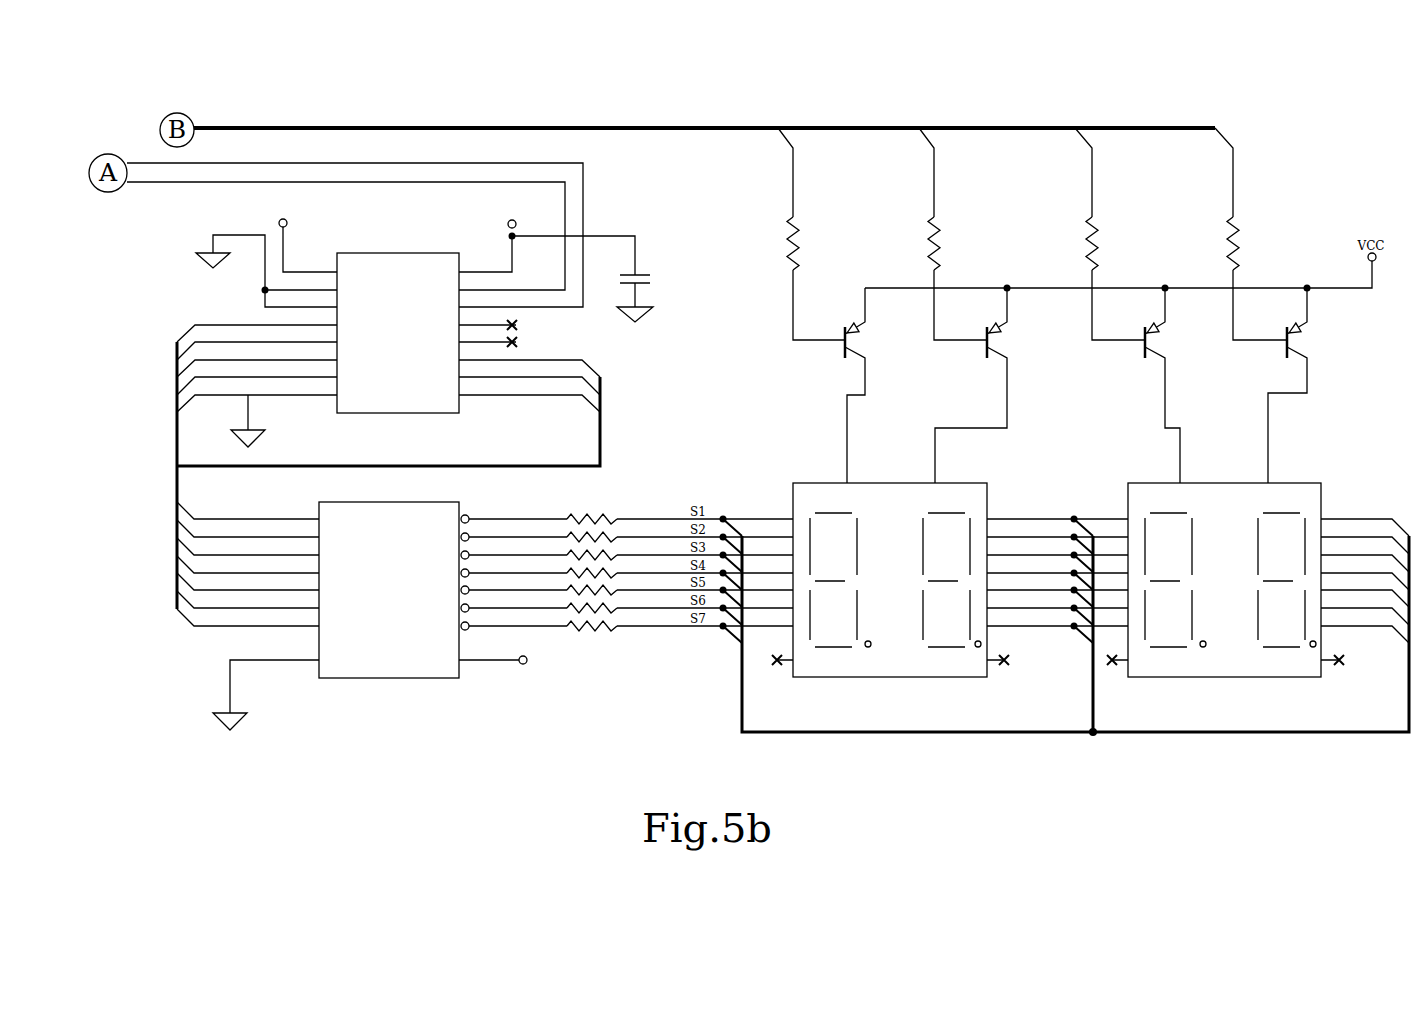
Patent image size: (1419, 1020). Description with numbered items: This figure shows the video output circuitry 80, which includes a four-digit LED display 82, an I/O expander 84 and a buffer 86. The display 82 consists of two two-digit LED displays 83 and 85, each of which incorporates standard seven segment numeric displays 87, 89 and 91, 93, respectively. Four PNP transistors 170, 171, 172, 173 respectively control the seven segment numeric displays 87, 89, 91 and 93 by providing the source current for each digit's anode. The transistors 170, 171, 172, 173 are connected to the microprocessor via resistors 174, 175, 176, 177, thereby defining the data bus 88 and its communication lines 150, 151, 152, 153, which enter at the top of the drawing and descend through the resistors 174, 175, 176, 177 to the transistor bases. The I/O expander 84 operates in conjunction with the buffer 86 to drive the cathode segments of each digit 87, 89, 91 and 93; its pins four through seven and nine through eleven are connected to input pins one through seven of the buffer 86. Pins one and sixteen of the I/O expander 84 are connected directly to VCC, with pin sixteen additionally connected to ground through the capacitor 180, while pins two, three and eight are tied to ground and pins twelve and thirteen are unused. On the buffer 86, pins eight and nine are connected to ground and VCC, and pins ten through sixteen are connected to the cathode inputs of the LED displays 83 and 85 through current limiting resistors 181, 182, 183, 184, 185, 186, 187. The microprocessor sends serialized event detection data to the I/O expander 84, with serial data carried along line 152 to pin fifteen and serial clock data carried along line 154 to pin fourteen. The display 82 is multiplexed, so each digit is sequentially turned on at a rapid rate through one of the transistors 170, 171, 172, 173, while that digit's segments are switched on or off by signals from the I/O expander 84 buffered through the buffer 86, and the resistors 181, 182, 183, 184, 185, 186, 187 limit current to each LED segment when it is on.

The video output circuitry 80 is at (388, 111).
The 4 digit LED display 82 is at (1076, 567).
The 2-digit LED display 83 is at (902, 583).
The I/O expander 84 is at (385, 253).
The 2-digit LED display 85 is at (1236, 583).
The buffer 86 is at (365, 678).
The seven segment numeric display 87 is at (840, 545).
The data bus 88 is at (648, 128).
The seven segment numeric display 89 is at (935, 608).
The seven segment numeric display 91 is at (1182, 543).
The seven segment numeric display 93 is at (1278, 608).
The communication line 150 is at (797, 185).
The communication line 151 is at (938, 185).
The communication line / serial data line 152 is at (198, 184).
The communication line 153 is at (1237, 178).
The serial clock line 154 is at (287, 163).
The PNP transistor 170 is at (880, 352).
The PNP transistor 171 is at (1030, 352).
The PNP transistor 172 is at (1188, 350).
The PNP transistor 173 is at (1324, 350).
The resistor 174 is at (799, 245).
The resistor 175 is at (940, 243).
The resistor 176 is at (1098, 243).
The resistor 177 is at (1238, 243).
The capacitor 180 is at (648, 272).
The current limiting resistor 181 is at (603, 520).
The current limiting resistor 182 is at (593, 518).
The current limiting resistor 183 is at (587, 518).
The current limiting resistor 184 is at (583, 592).
The current limiting resistor 185 is at (591, 592).
The current limiting resistor 186 is at (596, 610).
The current limiting resistor 187 is at (603, 628).